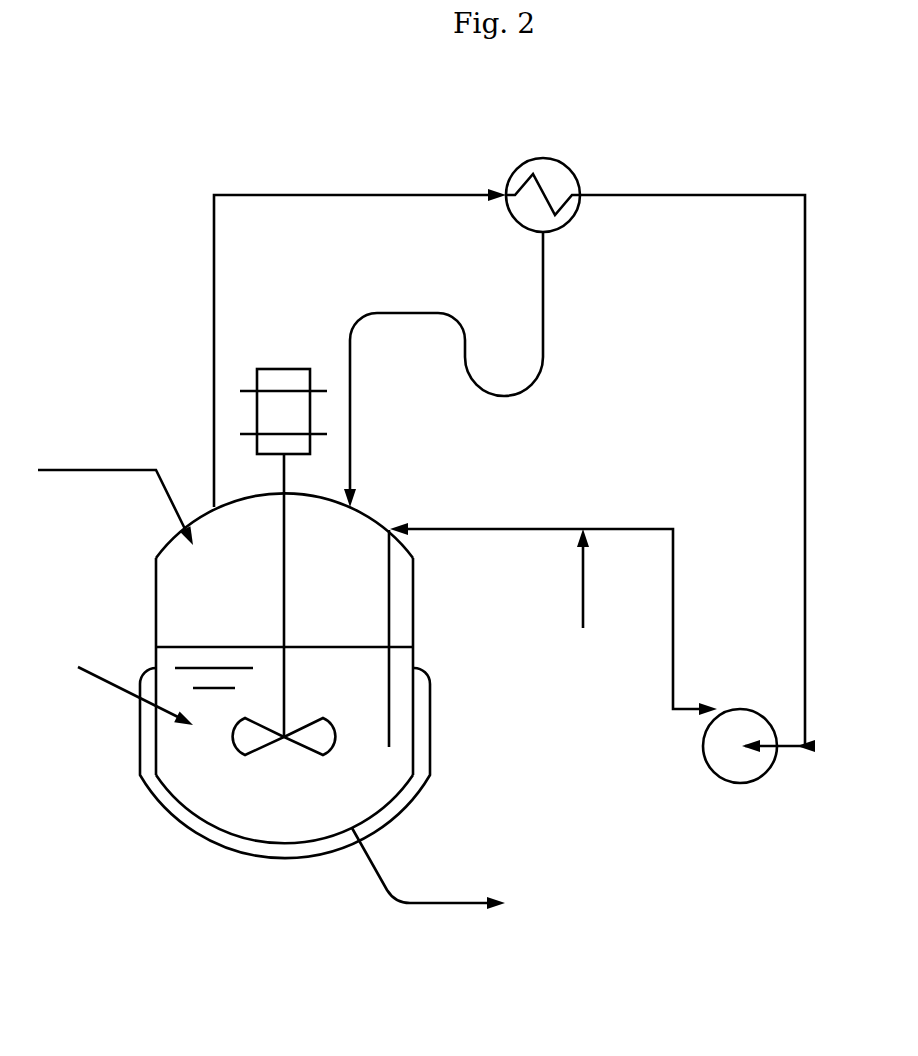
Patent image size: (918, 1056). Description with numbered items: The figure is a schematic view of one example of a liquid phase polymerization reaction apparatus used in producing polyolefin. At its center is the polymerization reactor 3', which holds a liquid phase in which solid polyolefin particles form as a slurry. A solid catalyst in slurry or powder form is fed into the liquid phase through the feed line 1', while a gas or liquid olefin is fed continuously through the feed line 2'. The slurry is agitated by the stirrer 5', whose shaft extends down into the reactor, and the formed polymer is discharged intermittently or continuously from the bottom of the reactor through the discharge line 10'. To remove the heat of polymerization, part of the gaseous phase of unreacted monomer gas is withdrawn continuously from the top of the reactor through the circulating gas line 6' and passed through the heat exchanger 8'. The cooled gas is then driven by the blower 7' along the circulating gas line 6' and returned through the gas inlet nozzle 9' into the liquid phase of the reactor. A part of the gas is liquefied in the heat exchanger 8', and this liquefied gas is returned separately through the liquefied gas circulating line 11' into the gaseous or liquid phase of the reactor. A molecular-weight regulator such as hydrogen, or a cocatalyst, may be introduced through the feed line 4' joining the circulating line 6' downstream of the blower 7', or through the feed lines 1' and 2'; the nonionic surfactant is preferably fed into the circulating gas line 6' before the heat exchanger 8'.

The feed line 1' is at (131, 715).
The feed line 2' is at (115, 479).
The polymerization reactor 3' is at (285, 696).
The feed line 4' is at (549, 584).
The stirrer 5' is at (267, 562).
The circulating gas line 6' is at (539, 444).
The blower 7' is at (758, 779).
The heat exchanger 8' is at (557, 162).
The gas inlet nozzle 9' is at (358, 638).
The discharge line 10' is at (430, 863).
The liquefied gas circulating line 11' is at (493, 369).